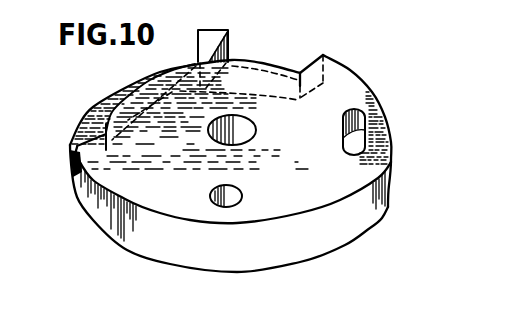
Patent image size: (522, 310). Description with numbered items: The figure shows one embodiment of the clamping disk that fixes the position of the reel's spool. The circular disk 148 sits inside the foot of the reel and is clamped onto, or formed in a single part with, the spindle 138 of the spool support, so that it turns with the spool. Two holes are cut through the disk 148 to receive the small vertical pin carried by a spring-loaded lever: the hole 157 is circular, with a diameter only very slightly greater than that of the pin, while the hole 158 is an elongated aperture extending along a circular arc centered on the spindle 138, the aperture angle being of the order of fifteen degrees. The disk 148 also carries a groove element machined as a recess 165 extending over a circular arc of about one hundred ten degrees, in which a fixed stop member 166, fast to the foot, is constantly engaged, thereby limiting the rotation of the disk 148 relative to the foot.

The circular disk 148 is at (386, 207).
The recess 165 is at (100, 106).
The fixed stop member 166 is at (224, 30).
The spindle 138 is at (239, 133).
The hole (elongated aperture) 158 is at (366, 99).
The hole (circular) 157 is at (230, 201).